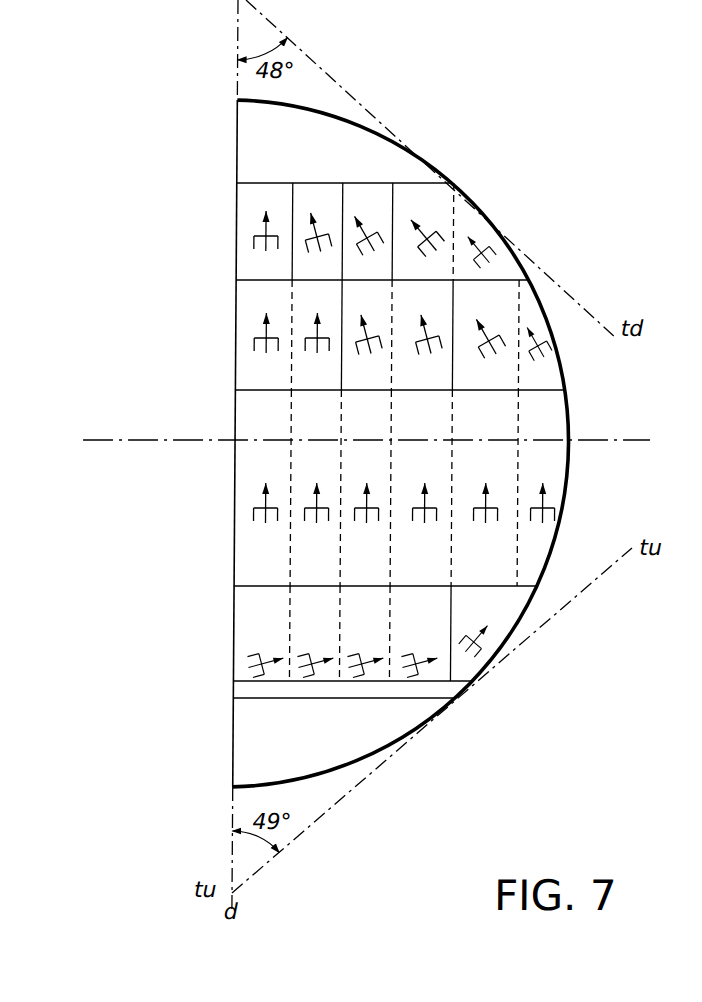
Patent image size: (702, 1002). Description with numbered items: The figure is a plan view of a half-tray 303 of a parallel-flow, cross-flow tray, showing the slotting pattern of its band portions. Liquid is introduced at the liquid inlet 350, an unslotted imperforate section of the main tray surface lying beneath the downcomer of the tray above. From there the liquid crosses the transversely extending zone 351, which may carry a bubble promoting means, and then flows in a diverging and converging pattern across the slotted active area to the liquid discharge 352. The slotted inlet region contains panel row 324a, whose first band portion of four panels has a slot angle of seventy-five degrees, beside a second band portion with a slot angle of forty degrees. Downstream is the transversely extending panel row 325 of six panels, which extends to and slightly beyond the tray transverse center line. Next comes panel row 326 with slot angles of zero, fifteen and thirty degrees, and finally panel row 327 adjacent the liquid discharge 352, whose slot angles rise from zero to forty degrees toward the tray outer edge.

The half-tray 303 is at (237, 409).
The panel row 324a is at (237, 636).
The panel row 325 is at (237, 523).
The panel row 326 is at (237, 347).
The panel row 327 is at (237, 246).
The liquid inlet 350 is at (248, 743).
The transversely extending zone 351 is at (248, 688).
The liquid discharge 352 is at (259, 136).